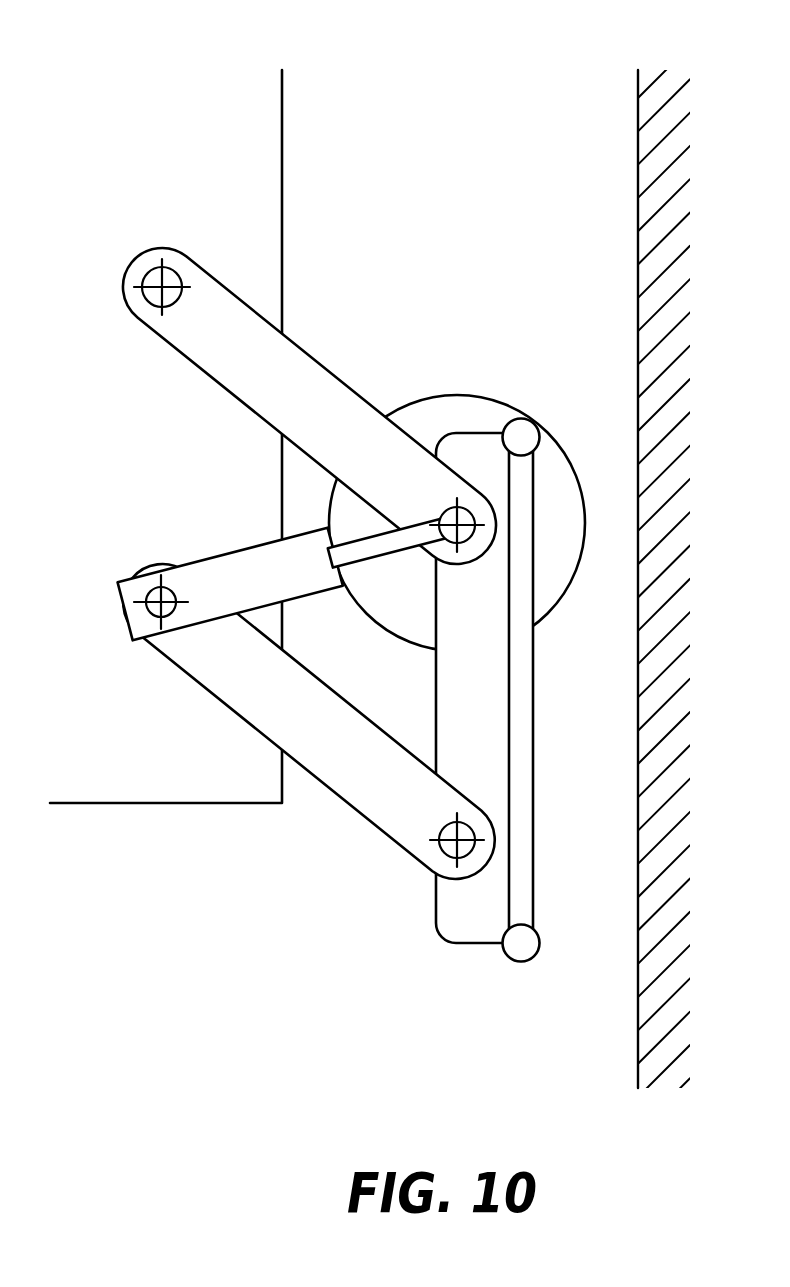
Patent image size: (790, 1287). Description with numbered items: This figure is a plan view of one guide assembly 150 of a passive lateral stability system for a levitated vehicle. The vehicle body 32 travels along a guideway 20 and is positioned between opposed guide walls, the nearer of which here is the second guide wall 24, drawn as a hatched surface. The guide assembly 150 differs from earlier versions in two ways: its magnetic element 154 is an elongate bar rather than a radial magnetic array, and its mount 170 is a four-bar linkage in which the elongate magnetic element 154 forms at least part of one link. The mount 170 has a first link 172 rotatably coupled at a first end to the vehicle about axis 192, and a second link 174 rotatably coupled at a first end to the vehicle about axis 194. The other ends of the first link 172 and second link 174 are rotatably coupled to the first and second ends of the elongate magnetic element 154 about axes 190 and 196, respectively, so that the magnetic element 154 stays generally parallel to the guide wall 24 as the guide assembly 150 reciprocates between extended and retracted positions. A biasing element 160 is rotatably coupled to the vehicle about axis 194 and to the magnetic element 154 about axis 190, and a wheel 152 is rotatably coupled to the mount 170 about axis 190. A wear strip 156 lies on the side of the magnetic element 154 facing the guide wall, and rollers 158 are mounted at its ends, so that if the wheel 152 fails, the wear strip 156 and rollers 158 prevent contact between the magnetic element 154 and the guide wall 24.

The guideway 20 is at (624, 588).
The second guide wall 24 is at (637, 980).
The body 32 is at (283, 156).
The guide assembly 150 is at (338, 516).
The wheel 152 is at (465, 396).
The elongate magnetic element 154 is at (437, 937).
The wear strip 156 is at (534, 693).
The rollers 158 is at (522, 426).
The biasing element 160 is at (232, 552).
The mount 170 is at (309, 563).
The first link 172 is at (345, 381).
The second link 174 is at (336, 795).
The axis 190 is at (463, 514).
The axis 192 is at (153, 277).
The axis 194 is at (158, 612).
The axis 196 is at (440, 845).